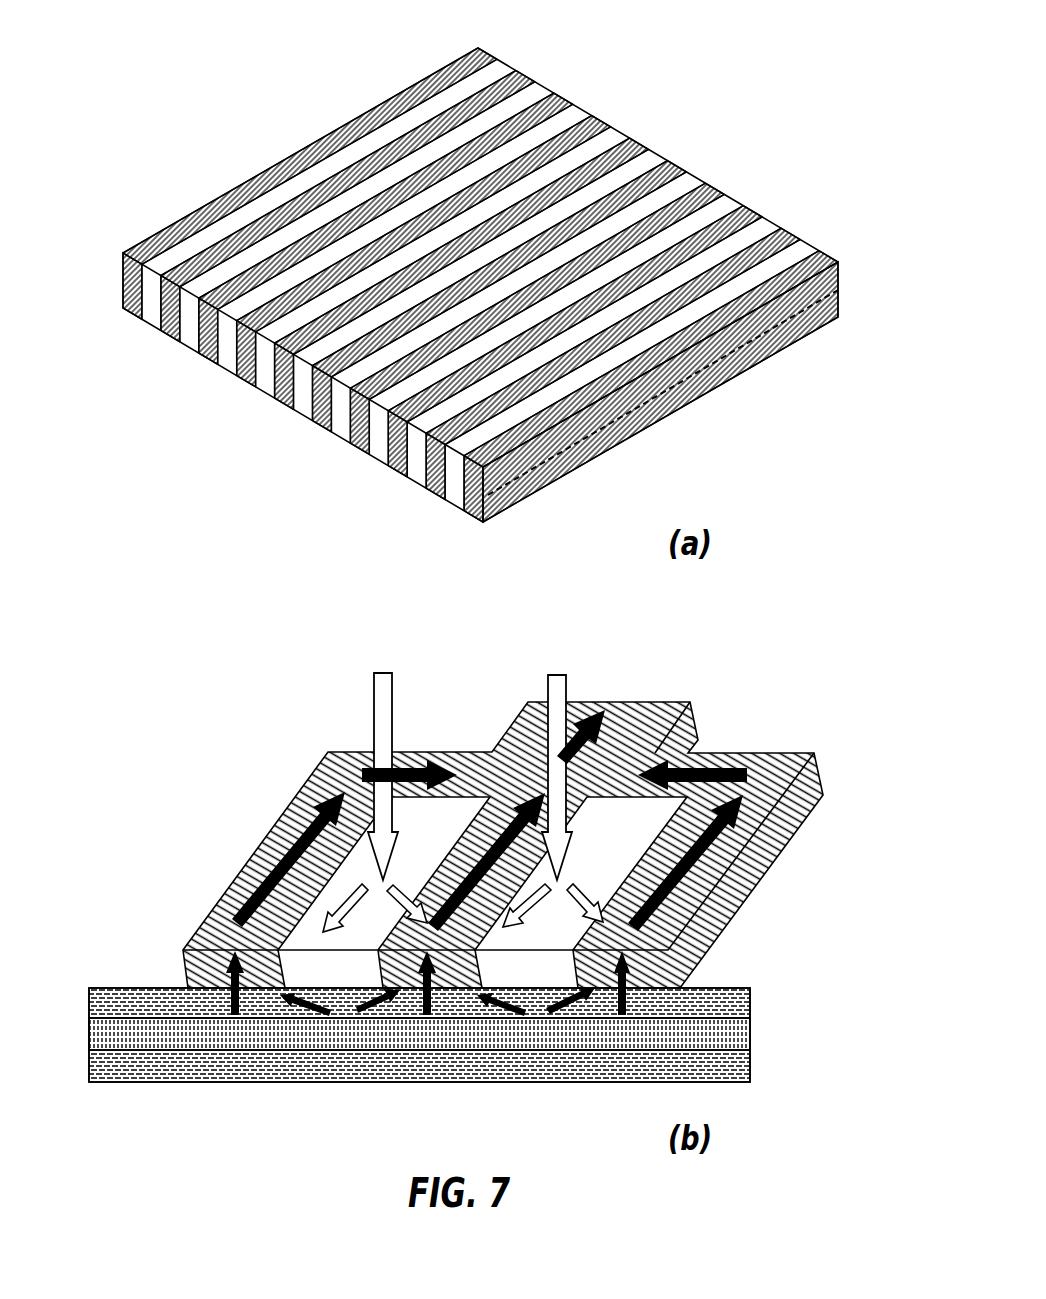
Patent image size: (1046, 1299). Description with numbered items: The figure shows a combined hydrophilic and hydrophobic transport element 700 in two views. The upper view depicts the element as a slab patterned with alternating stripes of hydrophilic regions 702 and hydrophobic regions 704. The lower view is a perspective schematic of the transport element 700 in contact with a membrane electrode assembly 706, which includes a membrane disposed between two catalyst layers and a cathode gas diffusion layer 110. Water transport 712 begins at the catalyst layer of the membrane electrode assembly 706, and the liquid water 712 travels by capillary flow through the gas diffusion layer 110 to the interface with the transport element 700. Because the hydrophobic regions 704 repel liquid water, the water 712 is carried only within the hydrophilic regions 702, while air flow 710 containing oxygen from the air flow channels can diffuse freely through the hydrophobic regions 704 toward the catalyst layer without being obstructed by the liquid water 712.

The combined hydrophilic and hydrophobic transport element 700 is at (172, 82).
The hydrophilic region 702 is at (505, 58).
The hydrophobic region 704 is at (548, 88).
The air flow 710 is at (388, 707).
The water transport 712 is at (705, 853).
The cathode gas diffusion layer 110 is at (112, 988).
The membrane electrode assembly 706 is at (790, 1030).